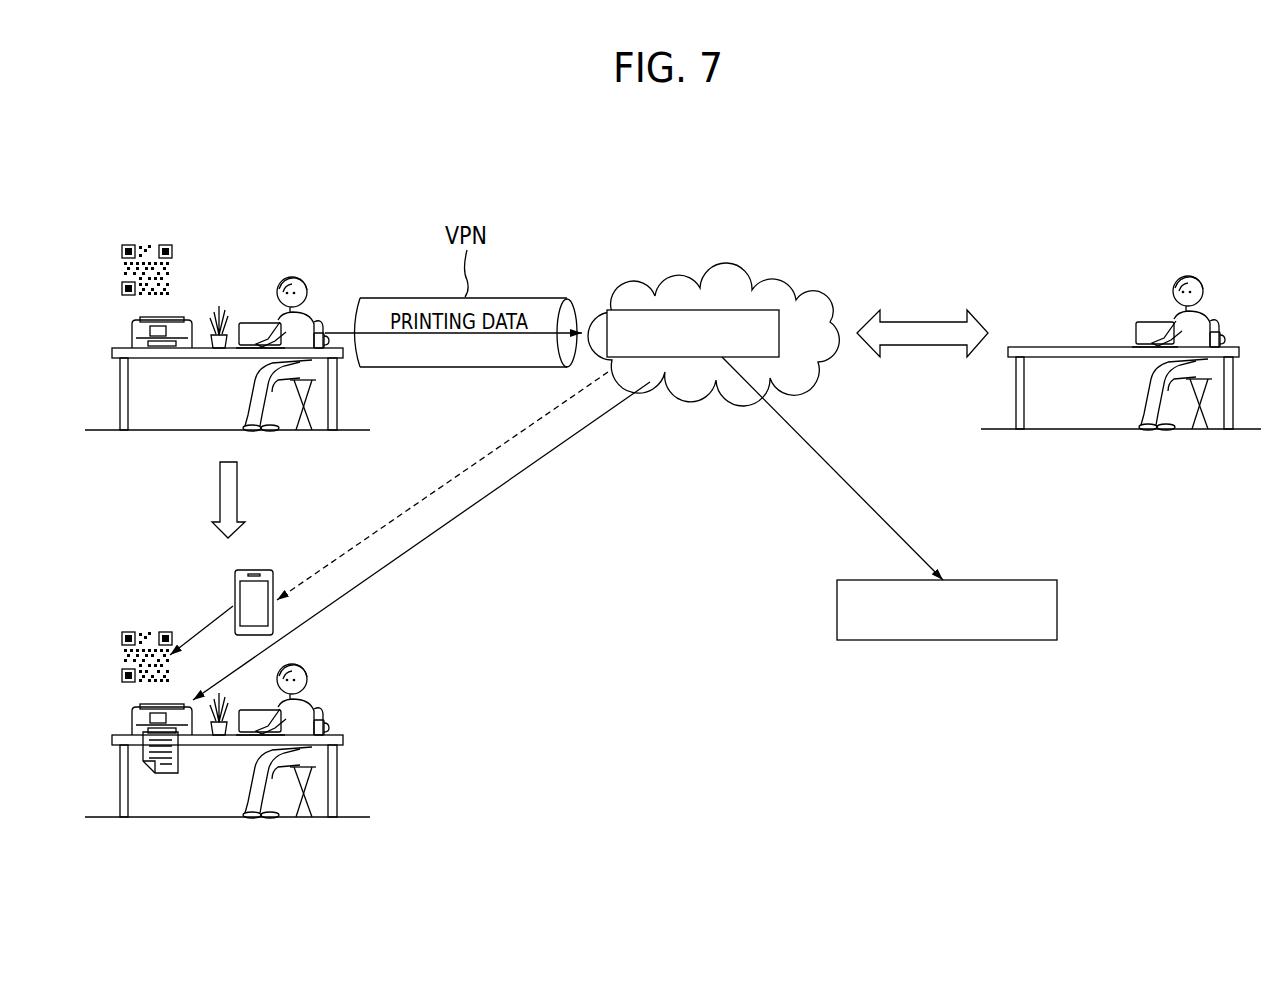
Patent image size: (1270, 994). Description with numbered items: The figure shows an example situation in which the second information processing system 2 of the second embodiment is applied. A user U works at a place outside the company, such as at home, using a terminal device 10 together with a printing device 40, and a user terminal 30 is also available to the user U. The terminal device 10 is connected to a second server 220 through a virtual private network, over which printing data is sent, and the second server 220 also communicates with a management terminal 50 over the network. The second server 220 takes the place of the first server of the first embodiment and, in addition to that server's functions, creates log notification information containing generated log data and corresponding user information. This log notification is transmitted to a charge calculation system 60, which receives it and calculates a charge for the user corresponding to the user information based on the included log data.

The second information processing system 2 is at (935, 193).
The terminal device 10 is at (253, 323).
The user terminal 30 is at (233, 588).
The printing device 40 is at (131, 333).
The management terminal 50 is at (1148, 322).
The charge calculation system 60 is at (996, 580).
The second server 220 is at (693, 310).
The user U is at (312, 283).